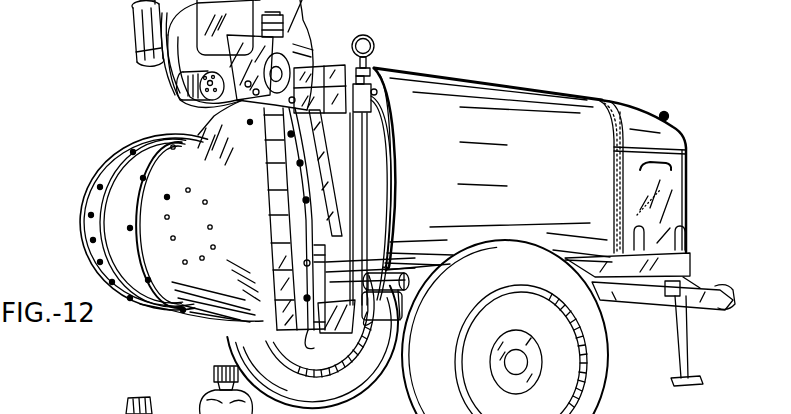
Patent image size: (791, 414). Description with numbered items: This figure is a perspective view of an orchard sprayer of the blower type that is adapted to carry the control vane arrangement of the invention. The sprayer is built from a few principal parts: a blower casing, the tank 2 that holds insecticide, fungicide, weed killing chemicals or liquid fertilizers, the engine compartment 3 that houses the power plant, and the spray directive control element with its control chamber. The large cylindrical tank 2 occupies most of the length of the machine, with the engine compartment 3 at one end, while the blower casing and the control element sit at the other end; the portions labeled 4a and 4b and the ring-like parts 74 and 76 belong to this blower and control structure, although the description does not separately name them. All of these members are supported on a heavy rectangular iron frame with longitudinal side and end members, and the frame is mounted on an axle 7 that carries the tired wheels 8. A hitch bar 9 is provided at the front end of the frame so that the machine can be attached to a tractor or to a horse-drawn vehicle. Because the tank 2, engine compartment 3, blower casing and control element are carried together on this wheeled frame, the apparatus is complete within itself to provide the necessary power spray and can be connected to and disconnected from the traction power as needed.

The tank 2 is at (537, 175).
The engine compartment 3 is at (636, 128).
The fan housing section 4a is at (246, 228).
The fan housing section 4b is at (214, 248).
The axle 7 is at (517, 367).
The tired wheels 8 is at (358, 382).
The hitch bar 9 is at (709, 289).
The outer ring of fan housing 74 is at (95, 195).
The inner ring of fan housing 76 is at (132, 230).